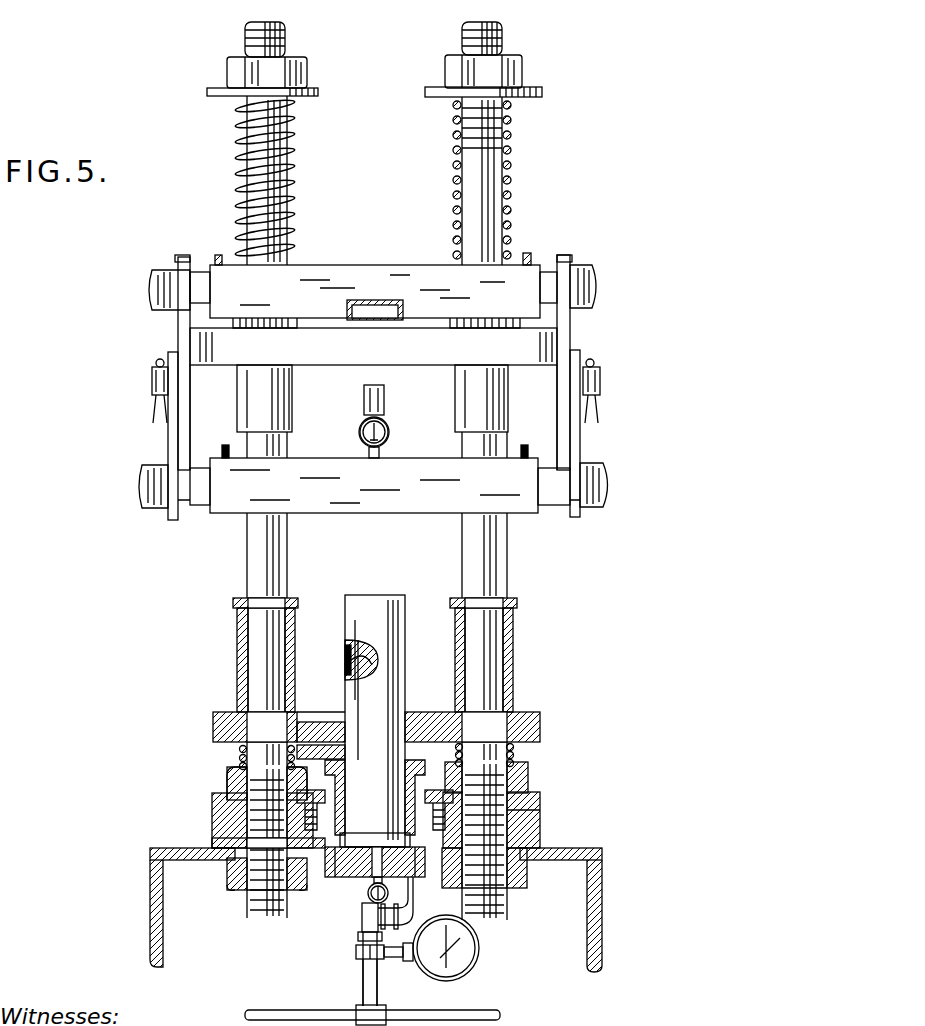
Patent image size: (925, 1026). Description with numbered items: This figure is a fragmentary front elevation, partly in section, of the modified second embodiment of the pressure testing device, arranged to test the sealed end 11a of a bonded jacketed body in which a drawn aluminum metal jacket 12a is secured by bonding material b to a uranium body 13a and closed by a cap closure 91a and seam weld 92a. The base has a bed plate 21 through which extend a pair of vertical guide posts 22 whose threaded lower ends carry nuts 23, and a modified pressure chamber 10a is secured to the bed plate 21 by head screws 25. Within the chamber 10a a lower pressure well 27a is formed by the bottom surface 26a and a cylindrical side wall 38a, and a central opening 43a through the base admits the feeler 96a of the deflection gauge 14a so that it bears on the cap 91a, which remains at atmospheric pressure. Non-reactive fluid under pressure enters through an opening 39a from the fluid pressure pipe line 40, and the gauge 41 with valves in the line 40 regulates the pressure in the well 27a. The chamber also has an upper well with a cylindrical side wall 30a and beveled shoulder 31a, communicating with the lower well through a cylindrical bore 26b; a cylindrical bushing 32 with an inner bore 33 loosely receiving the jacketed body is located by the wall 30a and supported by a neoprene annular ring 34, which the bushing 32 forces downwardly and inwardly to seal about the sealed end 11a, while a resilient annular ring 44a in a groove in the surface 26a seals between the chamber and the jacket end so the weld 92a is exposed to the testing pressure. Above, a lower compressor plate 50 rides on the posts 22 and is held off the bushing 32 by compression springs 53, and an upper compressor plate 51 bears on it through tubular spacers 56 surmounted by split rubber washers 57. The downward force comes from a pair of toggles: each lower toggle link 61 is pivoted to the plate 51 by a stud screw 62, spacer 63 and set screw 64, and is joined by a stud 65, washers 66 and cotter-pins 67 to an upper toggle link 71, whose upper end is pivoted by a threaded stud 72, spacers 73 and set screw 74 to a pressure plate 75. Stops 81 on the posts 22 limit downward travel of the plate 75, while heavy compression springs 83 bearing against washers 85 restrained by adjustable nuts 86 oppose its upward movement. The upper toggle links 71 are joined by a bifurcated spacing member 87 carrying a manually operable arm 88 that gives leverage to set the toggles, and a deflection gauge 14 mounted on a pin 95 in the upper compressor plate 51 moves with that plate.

The nuts 86 is at (235, 75).
The washers 85 is at (218, 96).
The heavy compression springs 83 is at (235, 170).
The pressure plate 75 is at (368, 268).
The manually operable arm 88 is at (400, 304).
The threaded stud 72 is at (160, 286).
The spacers 73 is at (200, 262).
The set screw 74 is at (218, 265).
The upper toggle link 71 is at (178, 327).
The lower toggle link 61 is at (168, 440).
The cotter-pins 67 is at (156, 364).
The stud 65 is at (152, 385).
The washers 66 is at (155, 405).
The bifurcated spacing member 87 is at (330, 355).
The stops 81 is at (290, 414).
The pin 95 is at (386, 400).
The deflection gauge 14 is at (358, 430).
The set screw 64 is at (226, 445).
The upper compressor plate 51 is at (232, 508).
The stud screw 62 is at (150, 488).
The spacer 63 is at (180, 512).
The vertical guide posts 22 is at (258, 576).
The split rubber washers 57 is at (233, 603).
The tubular spacers 56 is at (237, 641).
The cylindrical side wall 30a is at (362, 790).
The drawn aluminum metal jacket 12a is at (346, 648).
The bonding material b is at (345, 660).
The uranium body 13a is at (352, 670).
The lower compressor plate 50 is at (538, 726).
The cylindrical bushing 32 is at (335, 722).
The inner bore 33 is at (330, 760).
The compression springs 53 is at (512, 752).
The nuts 23 is at (528, 778).
The bed plate 21 is at (212, 800).
The cylindrical bore 26b is at (541, 811).
The beveled shoulder 31a is at (240, 840).
The annular ring 44a is at (545, 846).
The pressure well 27a is at (318, 870).
The bottom surface 26a is at (320, 862).
The neoprene annular ring 34 is at (340, 810).
The head screws 25 is at (310, 790).
The seam weld 92a is at (362, 833).
The cap closure 91a is at (376, 847).
The pressure chamber 10a is at (352, 870).
The sealed end 11a is at (360, 875).
The opening 43a is at (368, 893).
The deflection gauge 14a is at (370, 928).
The feeler 96a is at (366, 905).
The cylindrical side wall 38a is at (413, 878).
The opening 39a is at (414, 914).
The gauge 41 is at (472, 962).
The fluid pressure pipe line 40 is at (378, 995).